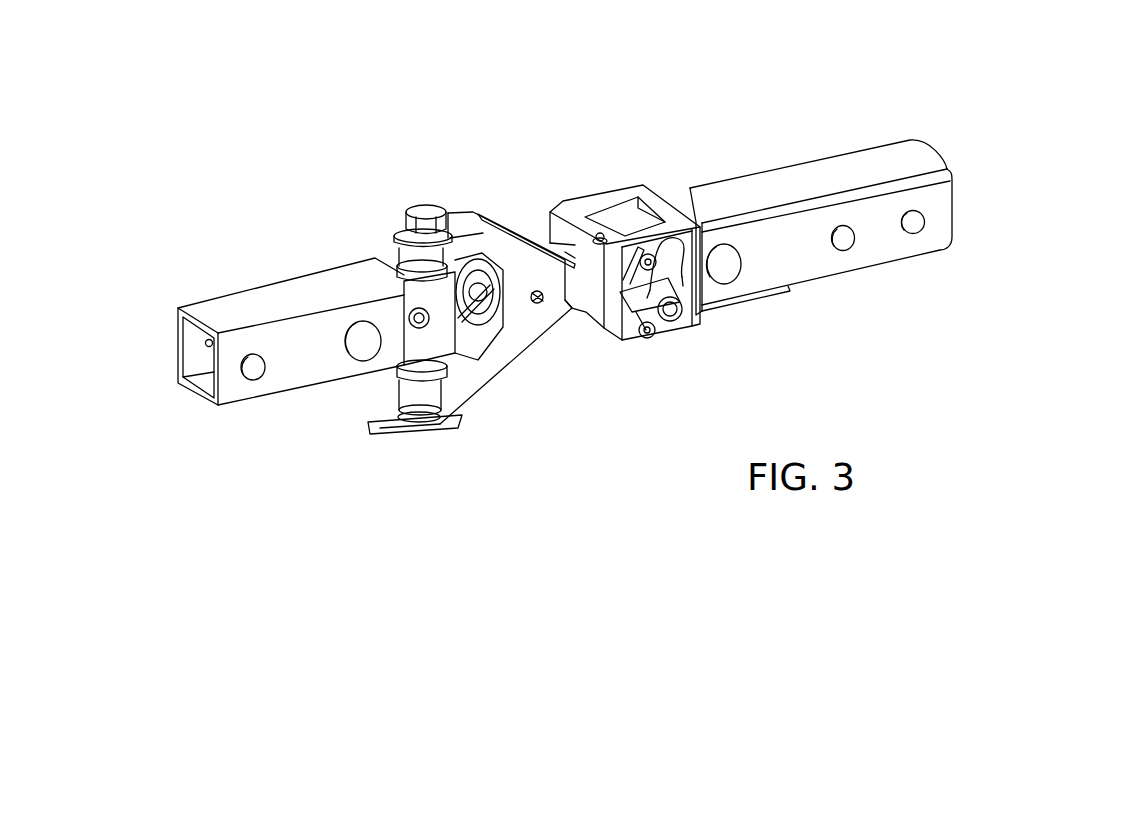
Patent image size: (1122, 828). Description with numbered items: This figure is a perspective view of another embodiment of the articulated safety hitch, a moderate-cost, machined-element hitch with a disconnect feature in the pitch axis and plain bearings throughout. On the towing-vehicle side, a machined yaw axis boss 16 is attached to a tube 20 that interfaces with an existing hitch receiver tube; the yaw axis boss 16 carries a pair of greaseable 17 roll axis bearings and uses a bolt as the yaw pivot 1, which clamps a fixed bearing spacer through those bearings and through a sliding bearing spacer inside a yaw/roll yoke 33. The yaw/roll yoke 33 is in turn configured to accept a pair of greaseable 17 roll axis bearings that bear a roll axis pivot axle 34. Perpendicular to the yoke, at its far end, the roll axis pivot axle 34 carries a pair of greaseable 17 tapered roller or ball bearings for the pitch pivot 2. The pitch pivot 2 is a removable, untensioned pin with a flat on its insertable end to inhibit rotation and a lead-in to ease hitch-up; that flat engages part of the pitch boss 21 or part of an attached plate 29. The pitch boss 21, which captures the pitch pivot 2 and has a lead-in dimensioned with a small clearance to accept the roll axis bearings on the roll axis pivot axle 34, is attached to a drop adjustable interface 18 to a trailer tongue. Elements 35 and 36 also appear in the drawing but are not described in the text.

The yaw pivot 1 is at (423, 194).
The pitch pivot 2 is at (677, 330).
The yaw axis boss 16 is at (412, 347).
The greaseable 17 is at (407, 302).
The drop adjustable interface 18 is at (892, 160).
The tube 20 is at (293, 365).
The pitch boss 21 is at (643, 180).
The attached plate 29 is at (634, 350).
The yaw/roll yoke 33 is at (505, 355).
The roll axis pivot axle 34 is at (560, 246).
The pin 35 is at (682, 318).
The bracket end 36 is at (589, 303).